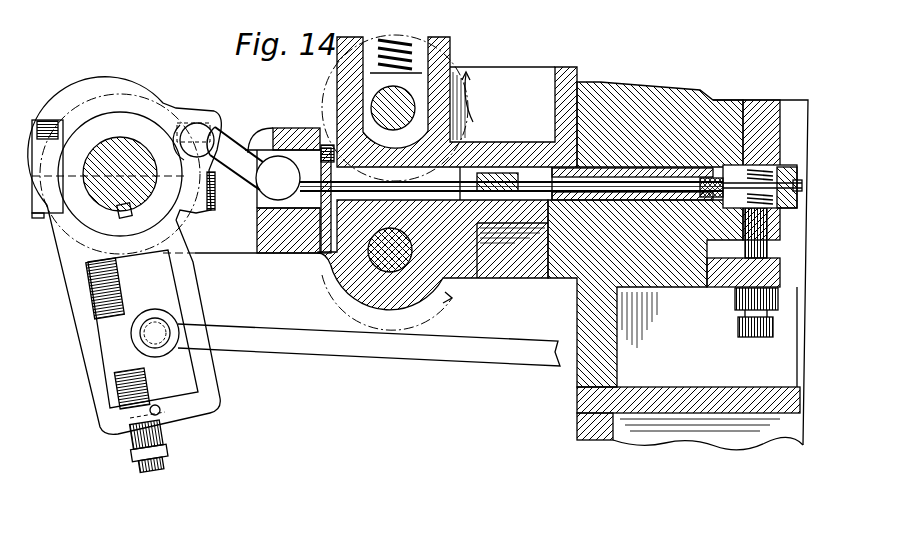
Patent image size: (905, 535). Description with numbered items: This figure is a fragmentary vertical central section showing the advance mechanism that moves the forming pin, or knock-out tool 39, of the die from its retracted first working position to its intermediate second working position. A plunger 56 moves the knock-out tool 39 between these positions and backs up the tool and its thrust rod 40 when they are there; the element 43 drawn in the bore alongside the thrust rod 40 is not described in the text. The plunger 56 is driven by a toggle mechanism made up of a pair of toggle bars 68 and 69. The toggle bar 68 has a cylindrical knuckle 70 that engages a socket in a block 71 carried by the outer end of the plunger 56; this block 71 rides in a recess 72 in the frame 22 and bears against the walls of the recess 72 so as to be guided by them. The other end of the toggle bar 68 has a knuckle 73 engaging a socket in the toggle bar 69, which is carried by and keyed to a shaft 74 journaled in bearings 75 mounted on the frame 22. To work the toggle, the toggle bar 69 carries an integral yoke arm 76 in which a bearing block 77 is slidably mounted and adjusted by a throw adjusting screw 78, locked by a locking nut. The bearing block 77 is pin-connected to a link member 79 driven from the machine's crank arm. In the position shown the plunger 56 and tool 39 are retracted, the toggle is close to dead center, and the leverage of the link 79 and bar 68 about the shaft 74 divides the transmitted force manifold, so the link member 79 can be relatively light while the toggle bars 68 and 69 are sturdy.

The frame 22 is at (344, 268).
The knock-out tool 39 is at (737, 177).
The thrust rod 40 is at (648, 183).
The stop plate 43 is at (497, 173).
The plunger 56 is at (333, 168).
The toggle bar 68 is at (227, 150).
The toggle bar 69 is at (150, 133).
The cylindrical knuckle 70 is at (268, 185).
The block 71 is at (293, 150).
The recess 72 is at (328, 200).
The knuckle 73 is at (197, 123).
The shaft 74 is at (113, 150).
The bearings 75 is at (38, 150).
The yoke arm 76 is at (97, 368).
The bearing block 77 is at (117, 335).
The throw adjusting screw 78 is at (125, 400).
The link member 79 is at (318, 347).